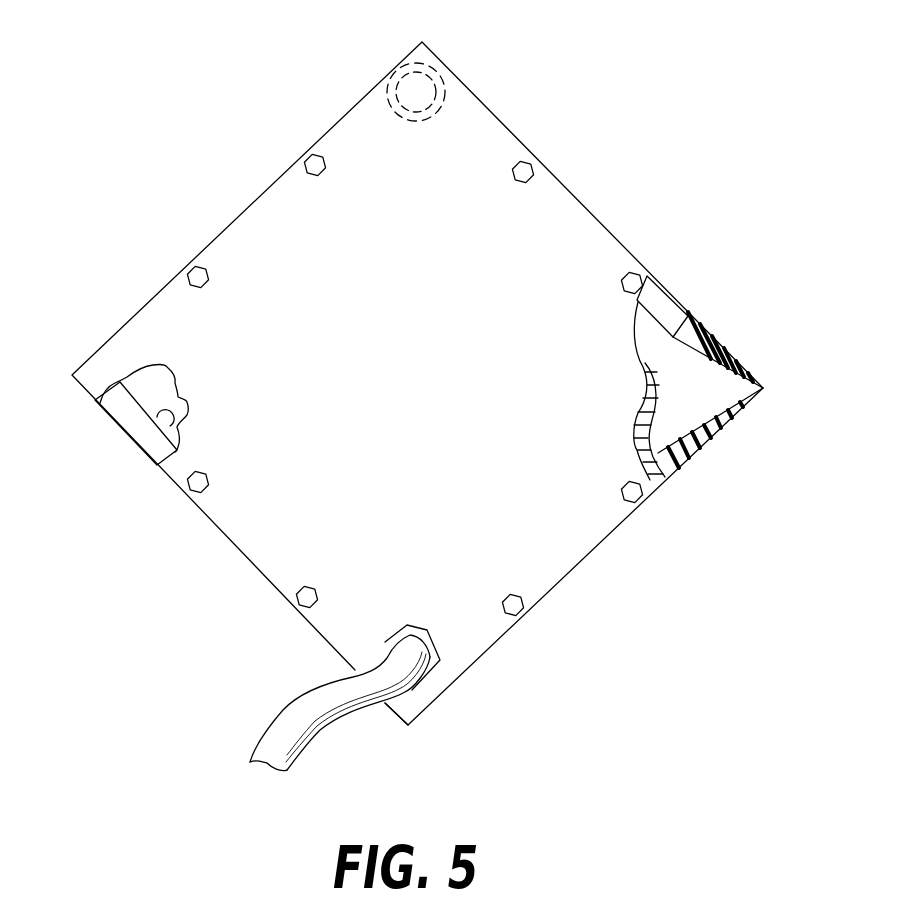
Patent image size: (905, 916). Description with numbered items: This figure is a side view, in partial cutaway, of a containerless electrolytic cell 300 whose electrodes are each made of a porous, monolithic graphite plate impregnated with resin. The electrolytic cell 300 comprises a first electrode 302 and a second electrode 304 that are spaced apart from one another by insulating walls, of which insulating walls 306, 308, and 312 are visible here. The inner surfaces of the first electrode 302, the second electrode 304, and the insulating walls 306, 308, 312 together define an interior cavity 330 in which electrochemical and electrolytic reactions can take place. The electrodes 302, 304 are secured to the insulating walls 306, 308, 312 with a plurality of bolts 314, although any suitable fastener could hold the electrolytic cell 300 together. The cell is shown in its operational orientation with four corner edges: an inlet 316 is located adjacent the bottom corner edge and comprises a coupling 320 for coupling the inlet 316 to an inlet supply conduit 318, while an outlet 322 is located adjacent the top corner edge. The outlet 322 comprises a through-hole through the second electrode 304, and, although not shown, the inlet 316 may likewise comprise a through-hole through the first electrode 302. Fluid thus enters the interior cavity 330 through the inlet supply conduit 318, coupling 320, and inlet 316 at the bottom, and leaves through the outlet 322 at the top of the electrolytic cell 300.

The electrolytic cell 300 is at (199, 183).
The first electrode 302 is at (557, 212).
The second electrode 304 is at (659, 349).
The insulating wall 306 is at (668, 293).
The insulating wall 308 is at (697, 453).
The insulating wall 312 is at (123, 408).
The bolts 314 is at (524, 160).
The inlet 316 is at (432, 620).
The inlet supply conduit 318 is at (283, 703).
The coupling 320 is at (410, 620).
The outlet 322 is at (425, 56).
The interior cavity 330 is at (157, 417).